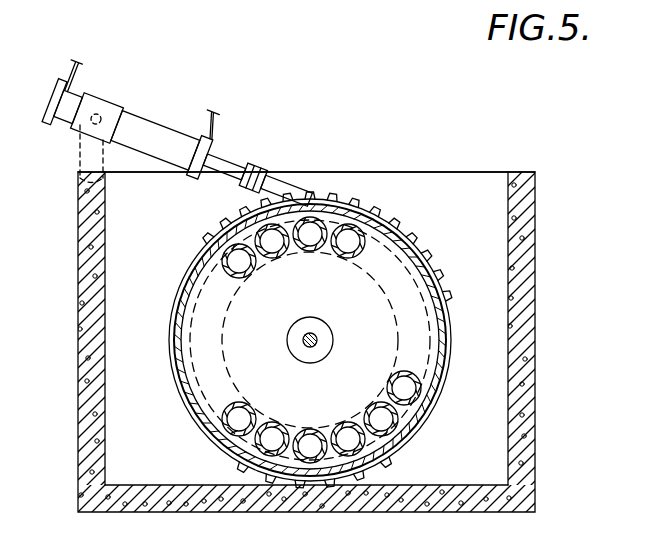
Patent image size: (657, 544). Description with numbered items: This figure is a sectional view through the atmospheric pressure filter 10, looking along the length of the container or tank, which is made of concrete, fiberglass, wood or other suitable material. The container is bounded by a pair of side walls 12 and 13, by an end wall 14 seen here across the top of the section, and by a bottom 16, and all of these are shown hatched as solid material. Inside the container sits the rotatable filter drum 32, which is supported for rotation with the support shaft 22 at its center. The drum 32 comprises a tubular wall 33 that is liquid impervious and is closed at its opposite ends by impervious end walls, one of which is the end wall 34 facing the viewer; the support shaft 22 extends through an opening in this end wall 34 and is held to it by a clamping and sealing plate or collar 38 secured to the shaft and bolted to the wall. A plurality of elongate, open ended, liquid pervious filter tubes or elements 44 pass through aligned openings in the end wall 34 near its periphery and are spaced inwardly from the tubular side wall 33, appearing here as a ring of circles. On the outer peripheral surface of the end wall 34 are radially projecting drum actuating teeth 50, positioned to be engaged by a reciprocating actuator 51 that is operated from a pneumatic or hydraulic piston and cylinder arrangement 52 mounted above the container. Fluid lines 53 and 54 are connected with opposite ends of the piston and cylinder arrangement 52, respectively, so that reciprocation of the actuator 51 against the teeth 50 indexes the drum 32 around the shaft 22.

The atmospheric pressure filter 10 is at (337, 140).
The side wall 12 is at (78, 218).
The side wall 13 is at (535, 200).
The end wall 14 is at (430, 173).
The bottom 16 is at (340, 513).
The support shaft 22 is at (318, 337).
The rotatable filter drum 32 is at (201, 245).
The tubular wall 33 is at (438, 330).
The end wall 34 is at (315, 398).
The clamping and sealing plate 38 is at (326, 356).
The filter tubes 44 is at (307, 251).
The drum actuating teeth 50 is at (381, 218).
The reciprocating actuator 51 is at (280, 178).
The piston and cylinder arrangement 52 is at (150, 120).
The fluid line 53 is at (215, 125).
The fluid line 54 is at (80, 78).